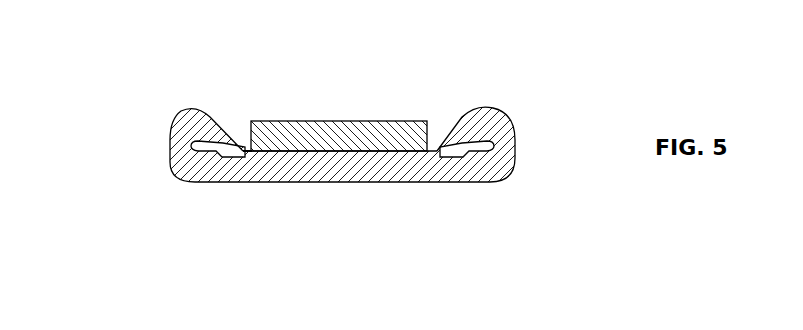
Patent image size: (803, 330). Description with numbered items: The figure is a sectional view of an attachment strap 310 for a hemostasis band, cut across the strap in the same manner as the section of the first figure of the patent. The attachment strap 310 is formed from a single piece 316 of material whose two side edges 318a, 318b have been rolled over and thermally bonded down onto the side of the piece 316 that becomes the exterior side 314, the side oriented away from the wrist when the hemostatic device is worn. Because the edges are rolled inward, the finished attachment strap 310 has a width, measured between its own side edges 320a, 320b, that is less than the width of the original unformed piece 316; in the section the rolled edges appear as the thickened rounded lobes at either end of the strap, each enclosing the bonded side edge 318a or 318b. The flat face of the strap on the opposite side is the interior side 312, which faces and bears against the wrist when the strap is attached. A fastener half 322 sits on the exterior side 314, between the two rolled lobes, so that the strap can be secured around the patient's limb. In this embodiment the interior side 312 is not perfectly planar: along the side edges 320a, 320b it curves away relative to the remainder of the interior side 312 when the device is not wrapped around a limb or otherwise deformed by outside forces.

The attachment strap 310 is at (334, 135).
The interior side 312 is at (332, 192).
The exterior side 314 is at (246, 139).
The piece 316 is at (258, 166).
The side edge of the piece 318a is at (243, 150).
The side edge of the piece 318b is at (438, 148).
The side edge of the attachment strap 320a is at (156, 152).
The side edge of the attachment strap 320b is at (529, 149).
The fastener half 322 is at (335, 137).